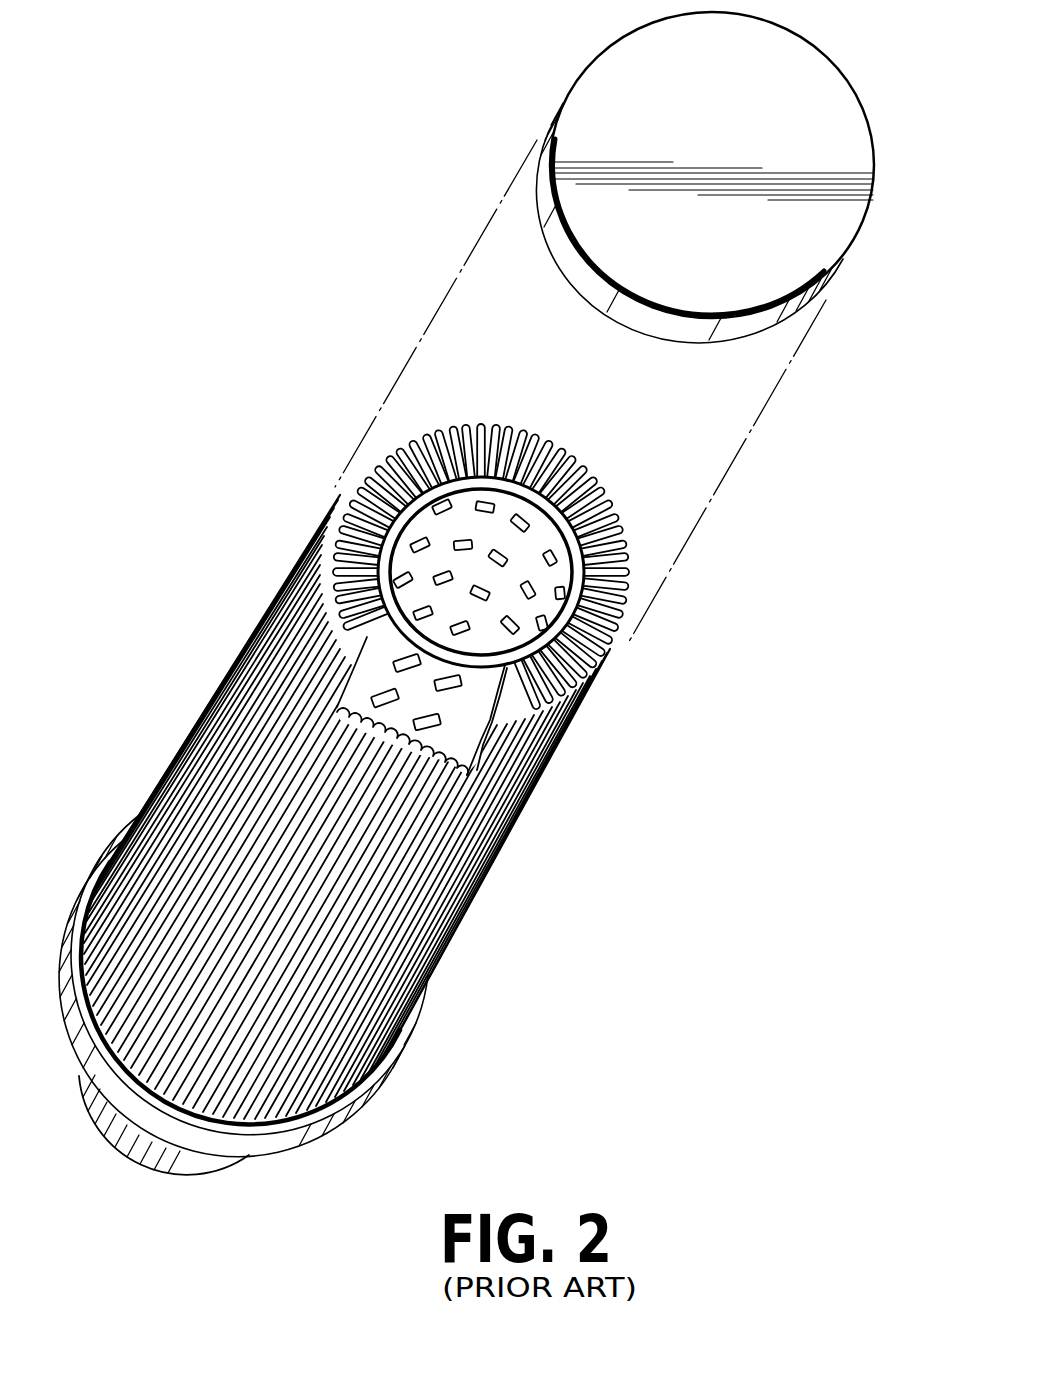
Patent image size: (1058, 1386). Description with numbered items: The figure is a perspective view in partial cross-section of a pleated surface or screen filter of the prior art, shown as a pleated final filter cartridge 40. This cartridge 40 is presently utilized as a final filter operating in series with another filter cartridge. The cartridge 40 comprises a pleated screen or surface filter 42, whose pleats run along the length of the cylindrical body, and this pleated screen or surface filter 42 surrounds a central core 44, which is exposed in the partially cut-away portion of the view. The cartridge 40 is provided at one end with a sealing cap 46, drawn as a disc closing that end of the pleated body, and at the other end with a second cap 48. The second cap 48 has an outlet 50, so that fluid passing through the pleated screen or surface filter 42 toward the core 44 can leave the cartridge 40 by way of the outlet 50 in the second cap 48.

The pleated final filter cartridge 40 is at (560, 874).
The pleated screen or surface filter 42 is at (601, 523).
The core 44 is at (551, 478).
The sealing cap 46 is at (832, 231).
The second cap 48 is at (293, 1140).
The outlet 50 is at (197, 1173).